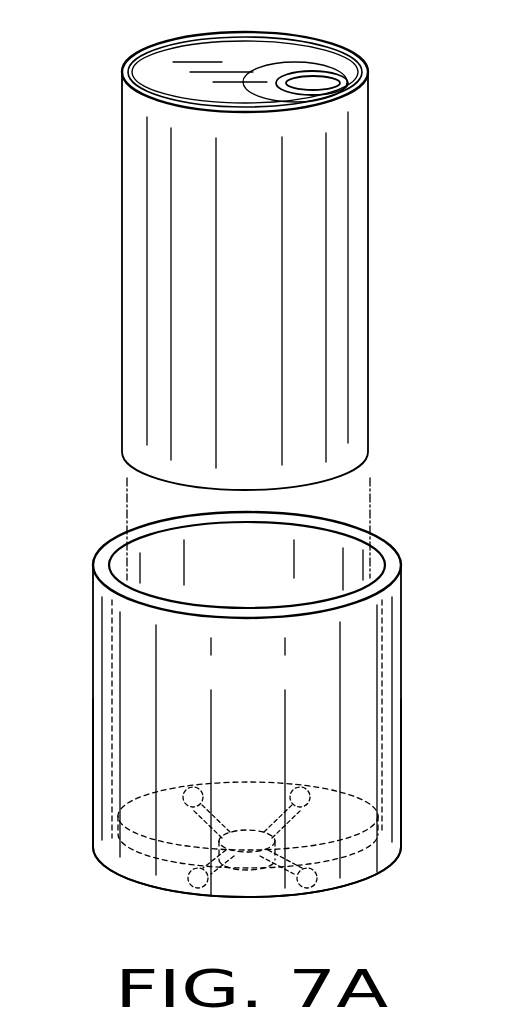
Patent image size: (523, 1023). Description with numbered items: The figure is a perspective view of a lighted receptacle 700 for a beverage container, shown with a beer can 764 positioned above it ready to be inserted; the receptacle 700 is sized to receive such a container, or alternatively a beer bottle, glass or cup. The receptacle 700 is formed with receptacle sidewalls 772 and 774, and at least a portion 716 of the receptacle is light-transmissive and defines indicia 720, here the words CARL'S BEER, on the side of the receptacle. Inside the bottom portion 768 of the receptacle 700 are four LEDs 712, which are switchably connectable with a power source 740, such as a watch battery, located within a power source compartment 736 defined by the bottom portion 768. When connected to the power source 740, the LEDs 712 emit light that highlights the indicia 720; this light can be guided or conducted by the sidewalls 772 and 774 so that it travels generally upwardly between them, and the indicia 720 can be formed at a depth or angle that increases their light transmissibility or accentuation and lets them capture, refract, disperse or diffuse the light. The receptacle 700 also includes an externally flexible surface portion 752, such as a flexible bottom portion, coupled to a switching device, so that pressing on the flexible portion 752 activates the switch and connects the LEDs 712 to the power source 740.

The beer can 764 is at (123, 252).
The lighted receptacle 700 is at (76, 641).
The receptacle sidewall 774 is at (96, 568).
The receptacle sidewall 772 is at (148, 535).
The light-transmissive portion 716 is at (247, 715).
The indicia 720 is at (293, 680).
The power source compartment 736 is at (120, 856).
The LEDs 712 is at (183, 794).
The power source 740 is at (255, 870).
The externally flexible surface portion 752 is at (299, 893).
The bottom portion 768 is at (207, 893).